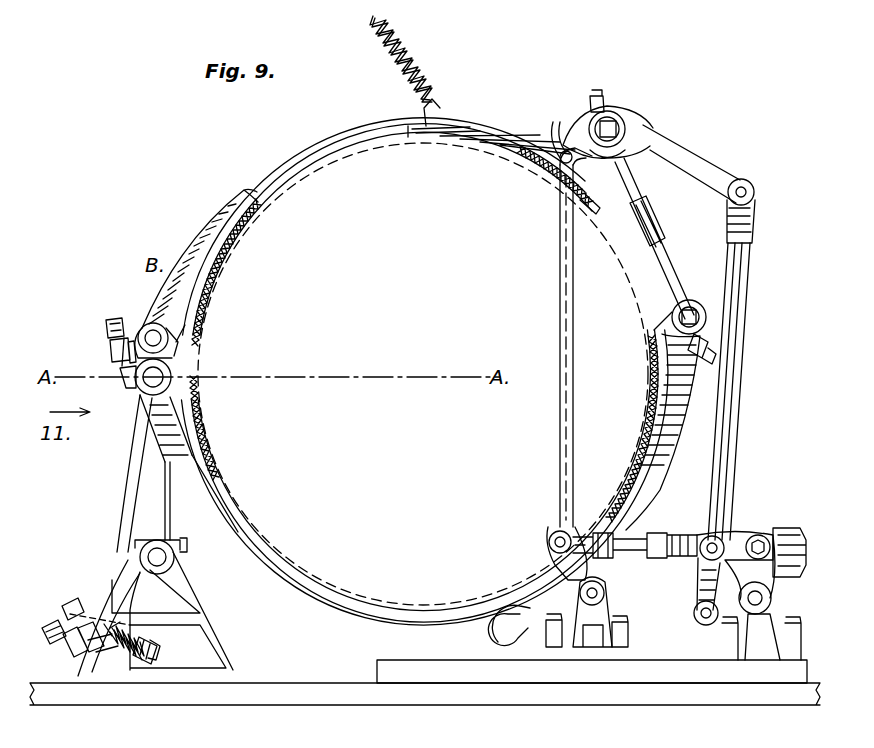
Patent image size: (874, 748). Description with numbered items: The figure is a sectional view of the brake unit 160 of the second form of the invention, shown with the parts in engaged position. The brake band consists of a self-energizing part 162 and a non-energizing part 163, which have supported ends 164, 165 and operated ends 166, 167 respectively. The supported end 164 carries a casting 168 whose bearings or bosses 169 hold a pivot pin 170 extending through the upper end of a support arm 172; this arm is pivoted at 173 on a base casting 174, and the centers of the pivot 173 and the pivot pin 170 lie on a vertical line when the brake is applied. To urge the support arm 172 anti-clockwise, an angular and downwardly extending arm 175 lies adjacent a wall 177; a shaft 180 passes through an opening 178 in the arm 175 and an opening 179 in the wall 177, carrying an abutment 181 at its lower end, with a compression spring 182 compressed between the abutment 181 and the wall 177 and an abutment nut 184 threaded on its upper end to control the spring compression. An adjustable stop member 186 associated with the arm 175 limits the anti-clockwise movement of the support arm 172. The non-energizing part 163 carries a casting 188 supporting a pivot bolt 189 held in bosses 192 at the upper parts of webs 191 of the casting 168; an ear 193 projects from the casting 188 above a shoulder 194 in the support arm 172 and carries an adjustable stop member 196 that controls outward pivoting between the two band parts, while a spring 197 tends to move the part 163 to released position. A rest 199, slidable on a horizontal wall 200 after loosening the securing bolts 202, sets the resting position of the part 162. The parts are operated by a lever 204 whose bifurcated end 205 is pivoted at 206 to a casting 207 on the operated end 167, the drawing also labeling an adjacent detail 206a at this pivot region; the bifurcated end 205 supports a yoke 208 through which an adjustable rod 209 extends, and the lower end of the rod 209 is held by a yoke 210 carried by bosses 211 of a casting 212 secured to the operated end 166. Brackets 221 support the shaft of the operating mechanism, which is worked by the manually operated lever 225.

The brake unit 160 is at (322, 152).
The self-energizing part 162 is at (352, 602).
The non-energizing part 163 is at (430, 121).
The supported end 164 is at (199, 417).
The supported end 165 is at (196, 346).
The operated end 166 is at (656, 350).
The operated end 167 is at (566, 185).
The casting 168 is at (207, 462).
The bearings or bosses 169 is at (172, 377).
The pivot pin 170 is at (148, 384).
The support arm 172 is at (140, 493).
The pivot 173 is at (140, 554).
The base casting 174 is at (200, 613).
The angular and downwardly extending arm 175 is at (95, 618).
The wall 177 is at (120, 658).
The opening 178 is at (60, 630).
The opening 179 is at (160, 628).
The shaft 180 is at (152, 662).
The abutment 181 is at (166, 650).
The compression spring 182 is at (130, 655).
The abutment nut 184 is at (70, 606).
The adjustable stop member 186 is at (100, 656).
The casting 188 is at (222, 214).
The pivot bolt 189 is at (152, 330).
The webs 191 is at (122, 318).
The bosses 192 is at (168, 336).
The ear 193 is at (110, 354).
The shoulder 194 is at (127, 380).
The adjustable stop member 196 is at (108, 330).
The spring 197 is at (404, 58).
The rest 199 is at (492, 622).
The horizontal wall 200 is at (382, 656).
The securing bolts 202 is at (600, 636).
The lever 204 is at (690, 153).
The bifurcated end 205 is at (640, 130).
The pivot 206 is at (540, 176).
The lug 206a is at (592, 135).
The casting 207 is at (500, 125).
The yoke 208 is at (612, 122).
The adjustable rod 209 is at (660, 222).
The yoke 210 is at (706, 312).
The bosses 211 is at (712, 333).
The casting 212 is at (736, 397).
The brackets 221 is at (768, 612).
The operating lever 225 is at (556, 471).